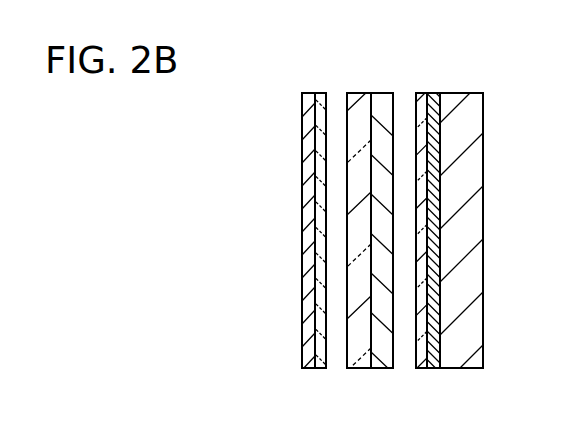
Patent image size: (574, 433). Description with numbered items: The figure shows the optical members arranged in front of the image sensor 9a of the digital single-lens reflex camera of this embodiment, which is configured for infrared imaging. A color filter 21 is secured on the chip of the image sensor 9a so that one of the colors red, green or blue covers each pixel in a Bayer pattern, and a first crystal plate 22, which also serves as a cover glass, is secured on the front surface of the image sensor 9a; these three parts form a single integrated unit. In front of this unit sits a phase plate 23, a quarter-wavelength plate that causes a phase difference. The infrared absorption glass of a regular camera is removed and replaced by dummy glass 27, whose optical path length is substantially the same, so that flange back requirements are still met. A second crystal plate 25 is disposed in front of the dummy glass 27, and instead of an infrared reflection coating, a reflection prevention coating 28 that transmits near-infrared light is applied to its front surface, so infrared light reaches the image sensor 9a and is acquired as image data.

The image sensor 9a is at (458, 93).
The color filter 21 is at (430, 93).
The first crystal plate 22 is at (423, 368).
The phase plate 23 is at (380, 93).
The second crystal plate 25 is at (317, 93).
The dummy glass 27 is at (358, 93).
The reflection prevention coating 28 is at (308, 93).